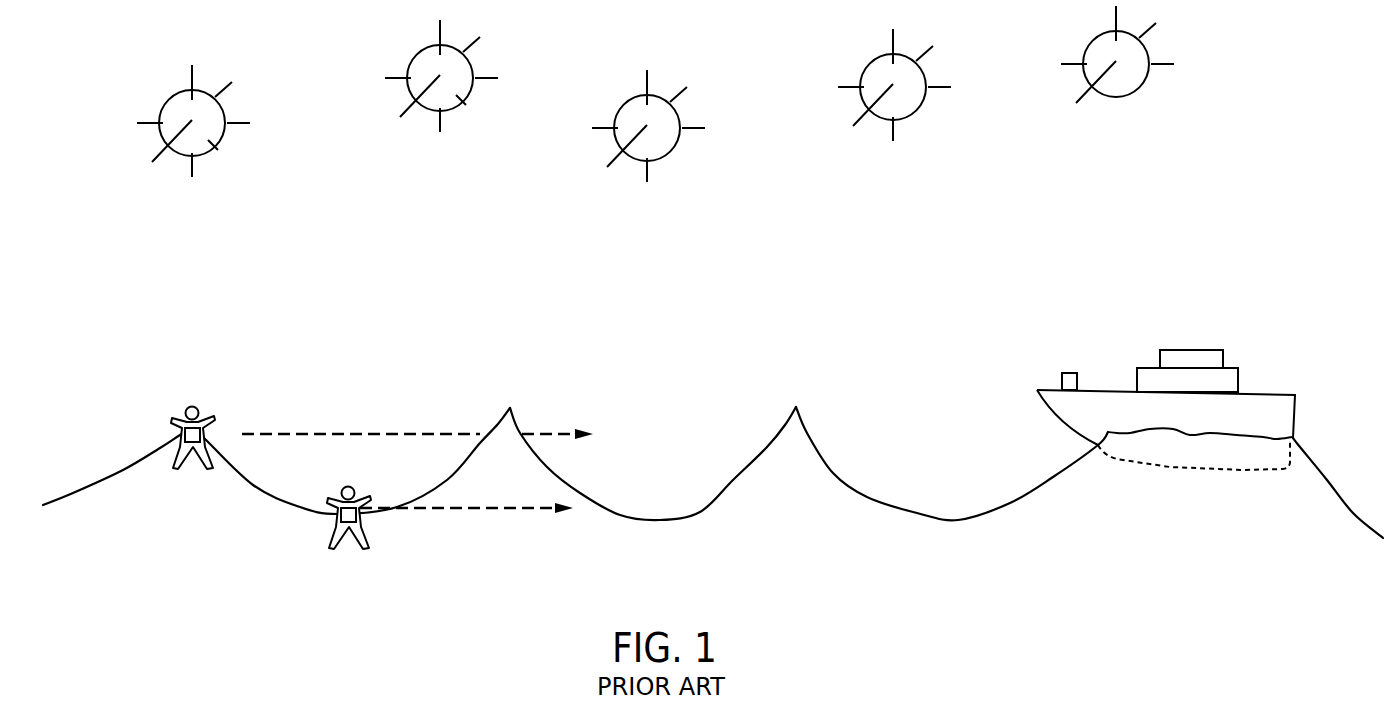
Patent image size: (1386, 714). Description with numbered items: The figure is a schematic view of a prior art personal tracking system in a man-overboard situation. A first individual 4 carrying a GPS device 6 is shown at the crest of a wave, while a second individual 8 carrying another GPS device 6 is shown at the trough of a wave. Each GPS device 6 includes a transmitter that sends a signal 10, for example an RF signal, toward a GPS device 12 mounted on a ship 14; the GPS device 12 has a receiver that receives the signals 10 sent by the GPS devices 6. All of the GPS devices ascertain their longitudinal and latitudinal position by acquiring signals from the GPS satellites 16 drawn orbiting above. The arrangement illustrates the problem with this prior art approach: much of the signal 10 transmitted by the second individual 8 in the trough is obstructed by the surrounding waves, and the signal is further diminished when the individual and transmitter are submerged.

The first individual 4 is at (180, 415).
The GPS device 6 is at (203, 437).
The second individual 8 is at (360, 495).
The signal 10 is at (413, 433).
The GPS device 12 is at (1067, 385).
The ship 14 is at (1212, 362).
The GPS satellites 16 is at (221, 146).